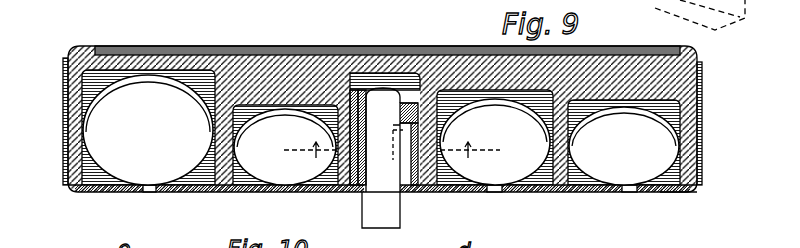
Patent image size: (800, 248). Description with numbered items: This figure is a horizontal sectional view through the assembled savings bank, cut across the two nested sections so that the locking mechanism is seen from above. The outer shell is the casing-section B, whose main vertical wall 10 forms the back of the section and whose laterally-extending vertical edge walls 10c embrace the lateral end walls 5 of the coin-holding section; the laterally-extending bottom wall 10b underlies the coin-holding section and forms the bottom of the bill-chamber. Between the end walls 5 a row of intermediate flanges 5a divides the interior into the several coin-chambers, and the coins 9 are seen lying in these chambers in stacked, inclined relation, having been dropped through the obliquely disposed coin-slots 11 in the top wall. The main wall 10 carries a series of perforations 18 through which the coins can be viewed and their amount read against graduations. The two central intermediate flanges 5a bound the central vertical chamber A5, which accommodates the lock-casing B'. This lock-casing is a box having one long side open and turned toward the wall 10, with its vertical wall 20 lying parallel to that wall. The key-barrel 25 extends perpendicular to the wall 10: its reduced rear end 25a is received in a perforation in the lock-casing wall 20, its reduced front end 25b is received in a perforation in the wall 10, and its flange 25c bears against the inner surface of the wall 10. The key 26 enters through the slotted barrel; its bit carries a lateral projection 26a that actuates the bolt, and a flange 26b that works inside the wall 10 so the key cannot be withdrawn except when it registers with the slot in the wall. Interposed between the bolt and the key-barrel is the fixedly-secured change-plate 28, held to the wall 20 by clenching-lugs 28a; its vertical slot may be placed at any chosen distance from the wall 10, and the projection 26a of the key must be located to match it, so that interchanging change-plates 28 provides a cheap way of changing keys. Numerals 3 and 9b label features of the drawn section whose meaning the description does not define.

The coin-holding section (section A) / lock chamber region 3 is at (364, 40).
The lateral end wall 5 is at (63, 146).
The intermediate flange 5a is at (225, 192).
The coin 9 is at (174, 62).
The ball top 9b is at (129, 46).
The vertical wall 10 is at (186, 192).
The bottom wall 10b is at (60, 11).
The vertical edge wall 10c is at (63, 116).
The coin-slot 11 is at (394, 151).
The perforation 18 is at (145, 192).
The vertical wall of lock-casing 20 is at (350, 118).
The key-barrel 25 is at (349, 129).
The reduced rear end 25a is at (366, 90).
The reduced front end 25b is at (361, 192).
The flange 25c is at (356, 190).
The key 26 is at (382, 158).
The lateral projection 26a is at (401, 121).
The flange of key-bit 26b is at (404, 192).
The change-plate 28 is at (400, 162).
The clenching-lug 28a is at (408, 100).
The casing-section B is at (680, 210).
The lock-casing B' is at (437, 55).
The central vertical chamber A5 is at (444, 40).